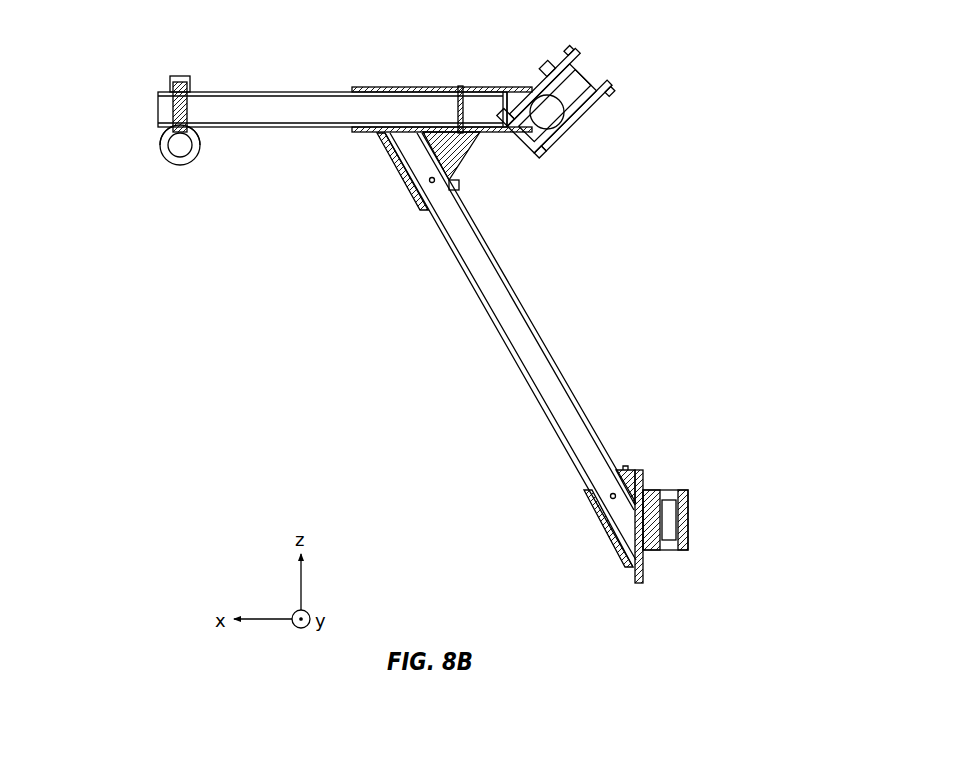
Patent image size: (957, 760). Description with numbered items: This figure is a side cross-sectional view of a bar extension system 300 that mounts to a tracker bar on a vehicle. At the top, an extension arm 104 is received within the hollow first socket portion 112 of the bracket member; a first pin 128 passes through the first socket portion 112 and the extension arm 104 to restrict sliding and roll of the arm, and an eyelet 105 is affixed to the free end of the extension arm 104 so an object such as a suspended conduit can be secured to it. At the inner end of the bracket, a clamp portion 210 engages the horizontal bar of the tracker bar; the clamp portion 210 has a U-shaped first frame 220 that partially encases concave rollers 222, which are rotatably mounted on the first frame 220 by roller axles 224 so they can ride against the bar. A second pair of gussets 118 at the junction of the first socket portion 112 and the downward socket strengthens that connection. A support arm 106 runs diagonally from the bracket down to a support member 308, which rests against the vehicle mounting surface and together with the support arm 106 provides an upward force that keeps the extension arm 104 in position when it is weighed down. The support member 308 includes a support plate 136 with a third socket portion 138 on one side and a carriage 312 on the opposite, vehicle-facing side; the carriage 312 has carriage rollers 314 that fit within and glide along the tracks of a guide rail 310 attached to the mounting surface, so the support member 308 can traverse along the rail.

The extension arm 104 is at (273, 92).
The eyelet 105 is at (162, 147).
The support arm 106 is at (516, 358).
The first socket portion 112 is at (412, 88).
The second pair of gussets 118 is at (462, 148).
The first pin 128 is at (462, 87).
The support plate 136 is at (638, 583).
The third socket portion 138 is at (592, 510).
The clamp portion 210 is at (548, 156).
The first frame 220 is at (582, 125).
The rollers 222 is at (578, 88).
The roller axles 224 is at (545, 63).
The support assembly 300 is at (731, 189).
The support member 308 is at (631, 534).
The guide rail 310 is at (672, 543).
The carriage 312 is at (645, 504).
The carriage rollers 314 is at (663, 506).